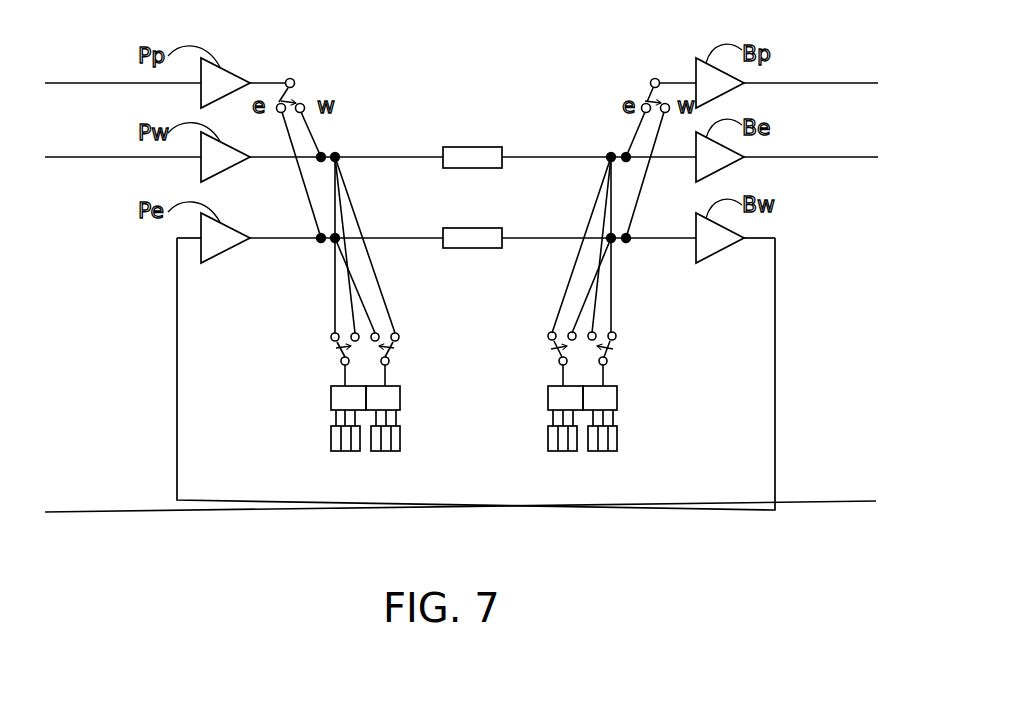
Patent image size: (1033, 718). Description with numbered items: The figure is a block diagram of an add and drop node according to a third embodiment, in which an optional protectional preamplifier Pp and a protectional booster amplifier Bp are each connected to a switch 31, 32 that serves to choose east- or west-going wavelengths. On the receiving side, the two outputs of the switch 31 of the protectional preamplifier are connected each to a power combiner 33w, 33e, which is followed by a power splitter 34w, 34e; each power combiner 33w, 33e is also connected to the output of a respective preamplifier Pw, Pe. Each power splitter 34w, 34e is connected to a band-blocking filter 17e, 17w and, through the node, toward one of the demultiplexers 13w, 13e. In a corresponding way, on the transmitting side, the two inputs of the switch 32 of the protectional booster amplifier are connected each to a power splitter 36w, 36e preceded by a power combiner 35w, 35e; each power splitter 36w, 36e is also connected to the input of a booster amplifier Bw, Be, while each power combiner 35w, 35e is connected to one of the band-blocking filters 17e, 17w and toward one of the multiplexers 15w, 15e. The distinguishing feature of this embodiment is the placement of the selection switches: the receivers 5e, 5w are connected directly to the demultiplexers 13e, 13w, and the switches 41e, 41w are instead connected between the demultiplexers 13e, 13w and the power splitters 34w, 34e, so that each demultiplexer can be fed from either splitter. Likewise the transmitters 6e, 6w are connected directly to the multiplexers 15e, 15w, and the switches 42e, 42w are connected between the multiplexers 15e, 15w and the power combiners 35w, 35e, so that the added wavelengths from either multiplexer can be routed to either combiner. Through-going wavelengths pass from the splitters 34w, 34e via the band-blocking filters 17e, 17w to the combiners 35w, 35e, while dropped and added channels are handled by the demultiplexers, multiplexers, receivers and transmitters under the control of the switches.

The switch 31 is at (298, 83).
The switch 32 is at (650, 83).
The power combiner 33e is at (320, 240).
The power combiner 33w is at (323, 155).
The power splitter 34e is at (342, 238).
The power splitter 34w is at (338, 157).
The power combiner 35e is at (609, 157).
The power combiner 35w is at (614, 240).
The power splitter 36e is at (622, 155).
The power splitter 36w is at (628, 240).
The band-blocking filter 17e is at (490, 147).
The band-blocking filter 17w is at (470, 248).
The switch 41e is at (333, 337).
The switch 41w is at (398, 336).
The switch 42e is at (552, 336).
The switch 42w is at (616, 337).
The demultiplexer 13e is at (331, 398).
The demultiplexer 13w is at (400, 398).
The multiplexer 15e is at (548, 397).
The multiplexer 15w is at (617, 398).
The receivers 5e is at (331, 436).
The receivers 5w is at (400, 437).
The transmitters 6e is at (548, 447).
The transmitters 6w is at (617, 435).